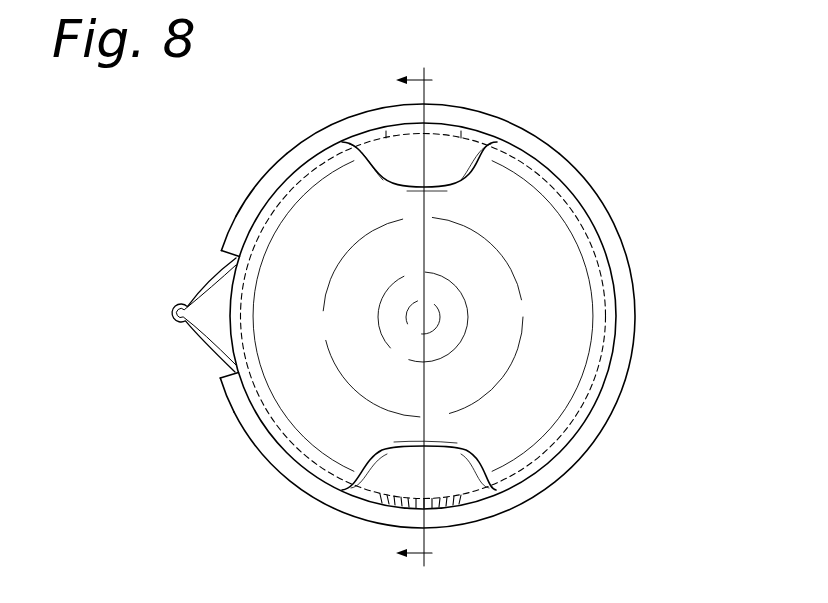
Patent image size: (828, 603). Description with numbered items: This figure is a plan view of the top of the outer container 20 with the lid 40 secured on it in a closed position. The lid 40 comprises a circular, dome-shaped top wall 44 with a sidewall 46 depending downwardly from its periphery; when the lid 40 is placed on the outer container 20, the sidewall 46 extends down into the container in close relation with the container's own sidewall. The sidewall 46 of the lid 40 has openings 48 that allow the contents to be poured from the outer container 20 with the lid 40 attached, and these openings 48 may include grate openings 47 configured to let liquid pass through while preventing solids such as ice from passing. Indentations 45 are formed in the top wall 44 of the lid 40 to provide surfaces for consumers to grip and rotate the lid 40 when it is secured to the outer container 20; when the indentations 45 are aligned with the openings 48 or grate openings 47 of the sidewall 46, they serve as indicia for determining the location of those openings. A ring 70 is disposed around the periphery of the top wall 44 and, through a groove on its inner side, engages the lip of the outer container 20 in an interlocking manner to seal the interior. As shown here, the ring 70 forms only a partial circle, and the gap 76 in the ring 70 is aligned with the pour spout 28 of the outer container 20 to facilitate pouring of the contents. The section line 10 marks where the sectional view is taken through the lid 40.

The section line 10- 10 is at (400, 318).
The outer container 20 is at (278, 448).
The pour spout 28 is at (200, 297).
The lid 40 is at (599, 243).
The top wall 44 is at (563, 310).
The indentations 45 is at (473, 168).
The sidewall 46 is at (591, 408).
The grate openings 47 is at (456, 507).
The openings 48 is at (446, 123).
The ring 70 is at (229, 410).
The gap 76 is at (221, 255).